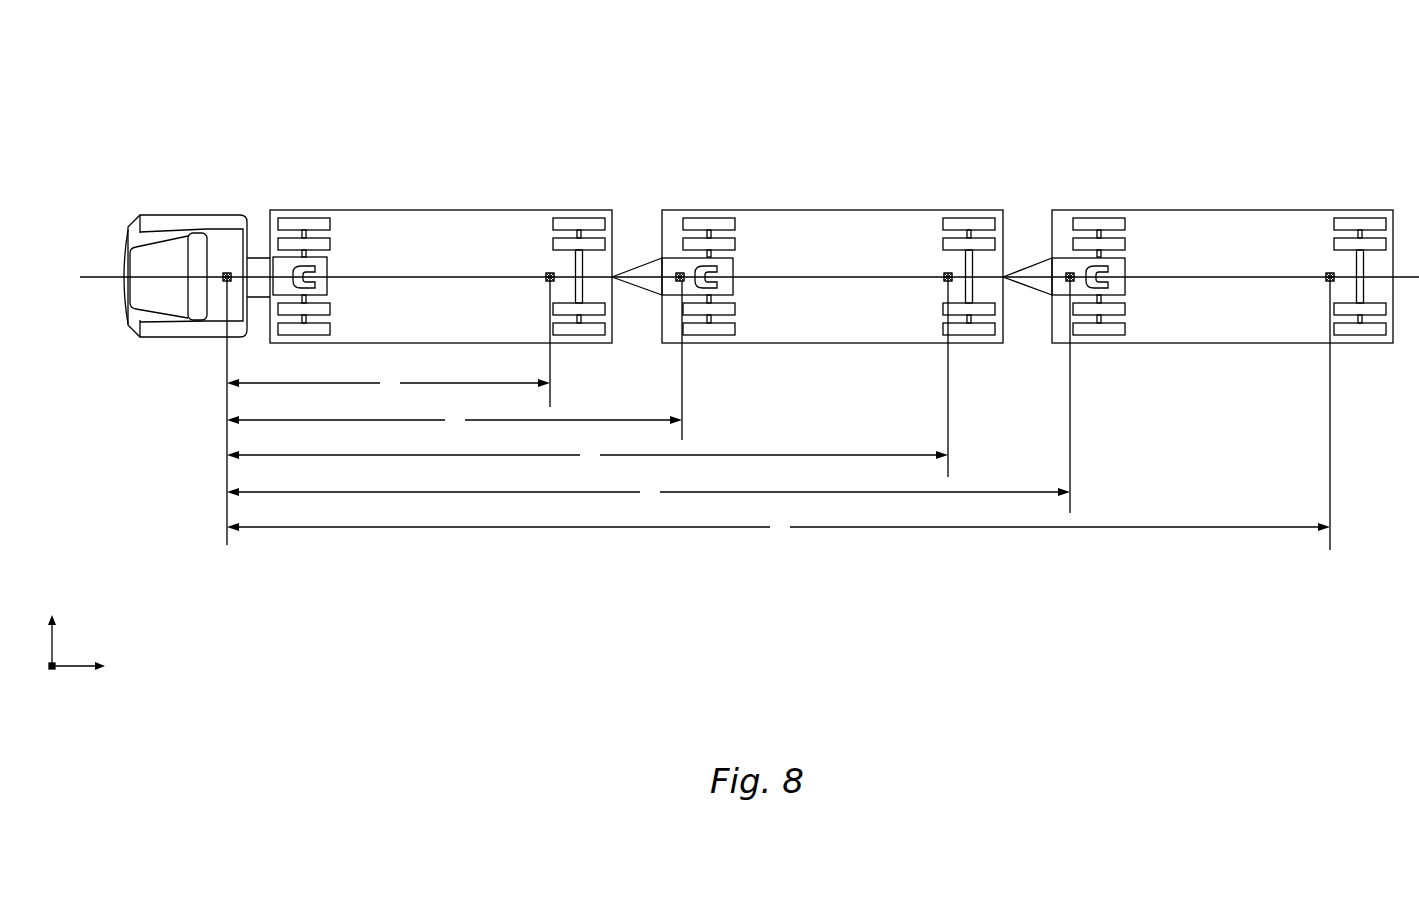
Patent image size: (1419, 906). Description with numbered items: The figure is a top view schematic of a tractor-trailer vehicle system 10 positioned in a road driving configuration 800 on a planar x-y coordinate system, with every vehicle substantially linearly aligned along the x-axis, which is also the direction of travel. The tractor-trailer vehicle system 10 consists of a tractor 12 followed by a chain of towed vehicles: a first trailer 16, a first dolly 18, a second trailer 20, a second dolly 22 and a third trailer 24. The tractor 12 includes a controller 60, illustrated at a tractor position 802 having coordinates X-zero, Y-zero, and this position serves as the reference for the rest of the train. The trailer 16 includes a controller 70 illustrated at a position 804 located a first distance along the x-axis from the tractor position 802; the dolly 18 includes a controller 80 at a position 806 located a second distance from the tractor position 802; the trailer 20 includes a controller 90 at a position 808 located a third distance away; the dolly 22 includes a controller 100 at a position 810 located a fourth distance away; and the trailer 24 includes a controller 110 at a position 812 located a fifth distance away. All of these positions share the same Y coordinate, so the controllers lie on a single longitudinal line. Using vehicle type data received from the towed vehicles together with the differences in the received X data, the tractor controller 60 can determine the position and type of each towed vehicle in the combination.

The configuration 800 is at (258, 64).
The tractor-trailer vehicle system 10 is at (512, 124).
The tractor 12 is at (173, 262).
The trailer 16 is at (442, 240).
The dolly 18 is at (656, 300).
The trailer 20 is at (830, 243).
The dolly 22 is at (1046, 300).
The trailer 24 is at (1222, 243).
The controller 60 is at (223, 284).
The controller 70 is at (547, 282).
The controller 80 is at (676, 271).
The controller 90 is at (945, 282).
The controller 100 is at (1066, 271).
The controller 110 is at (1327, 282).
The position 802 is at (226, 272).
The position 804 is at (548, 273).
The position 806 is at (678, 273).
The position 808 is at (946, 273).
The position 810 is at (1068, 273).
The position 812 is at (1328, 273).